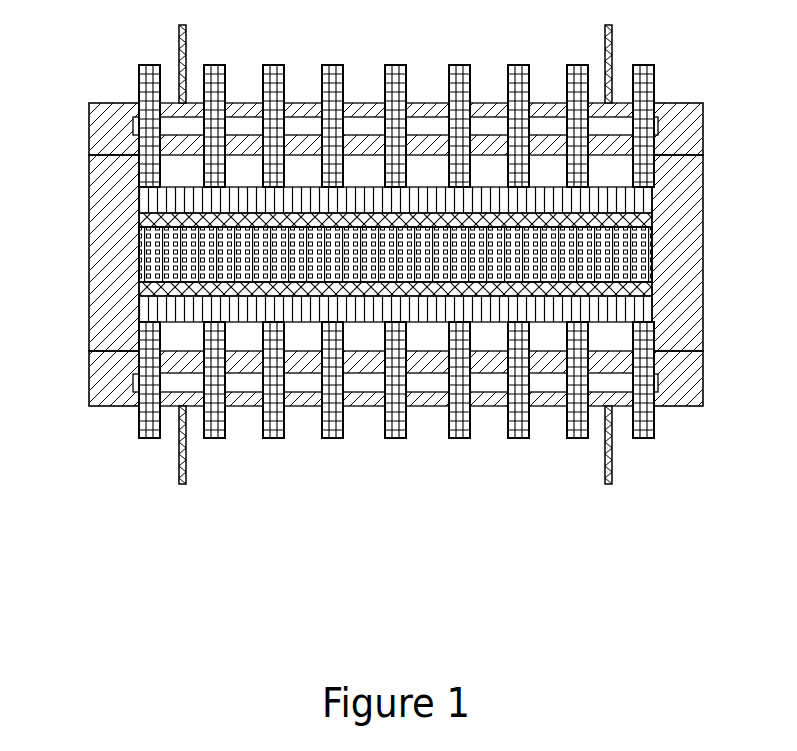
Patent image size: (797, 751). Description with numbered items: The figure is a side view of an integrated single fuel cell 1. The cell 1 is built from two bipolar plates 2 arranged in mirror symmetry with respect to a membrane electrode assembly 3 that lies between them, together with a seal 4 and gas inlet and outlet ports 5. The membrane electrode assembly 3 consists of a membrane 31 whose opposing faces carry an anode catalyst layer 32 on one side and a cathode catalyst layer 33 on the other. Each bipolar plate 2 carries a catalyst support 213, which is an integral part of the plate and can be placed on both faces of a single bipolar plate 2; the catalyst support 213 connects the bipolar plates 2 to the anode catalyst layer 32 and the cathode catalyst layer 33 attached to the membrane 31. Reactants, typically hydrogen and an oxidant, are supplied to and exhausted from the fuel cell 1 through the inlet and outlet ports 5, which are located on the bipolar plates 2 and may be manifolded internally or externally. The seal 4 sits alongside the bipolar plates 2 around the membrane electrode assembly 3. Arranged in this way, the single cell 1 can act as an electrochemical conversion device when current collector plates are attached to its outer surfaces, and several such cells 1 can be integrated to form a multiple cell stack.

The integrated single fuel cell 1 is at (402, 322).
The bipolar plate 2 is at (89, 125).
The catalyst support 213 is at (139, 200).
The membrane electrode assembly 3 is at (461, 242).
The membrane 31 is at (410, 266).
The anode catalyst layer 32 is at (652, 213).
The cathode catalyst layer 33 is at (453, 302).
The seal 4 is at (89, 255).
The gas inlet and outlet port 5 is at (179, 32).